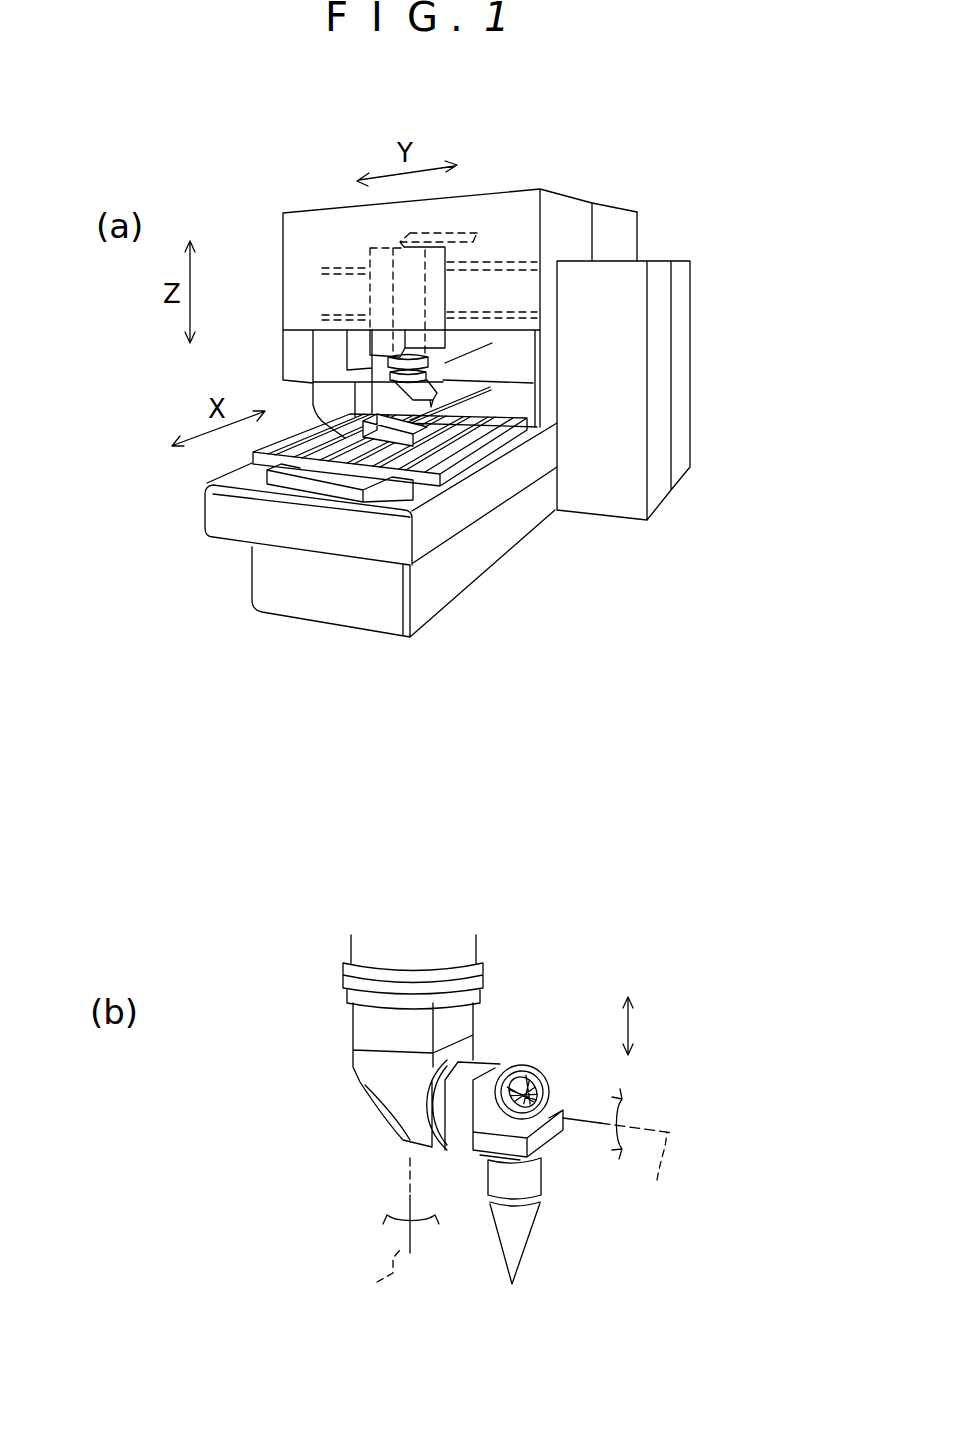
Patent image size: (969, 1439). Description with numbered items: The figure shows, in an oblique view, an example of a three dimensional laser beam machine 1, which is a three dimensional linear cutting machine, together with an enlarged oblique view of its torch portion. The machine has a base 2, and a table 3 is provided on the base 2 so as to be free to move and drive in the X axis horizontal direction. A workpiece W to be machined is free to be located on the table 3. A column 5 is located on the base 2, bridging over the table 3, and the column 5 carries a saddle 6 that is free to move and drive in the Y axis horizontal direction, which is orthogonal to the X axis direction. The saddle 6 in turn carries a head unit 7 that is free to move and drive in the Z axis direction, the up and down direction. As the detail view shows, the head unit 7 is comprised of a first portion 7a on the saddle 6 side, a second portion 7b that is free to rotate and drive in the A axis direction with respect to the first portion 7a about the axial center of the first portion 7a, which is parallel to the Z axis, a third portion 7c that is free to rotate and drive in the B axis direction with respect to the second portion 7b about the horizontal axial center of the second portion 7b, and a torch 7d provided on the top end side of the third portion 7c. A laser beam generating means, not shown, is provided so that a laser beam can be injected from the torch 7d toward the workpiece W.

The three dimensional laser beam machine 1 is at (478, 140).
The base 2 is at (473, 585).
The table 3 is at (467, 466).
The column 5 is at (283, 282).
The saddle 6 is at (473, 277).
The head unit 7 is at (447, 371).
The first portion 7a is at (480, 958).
The second portion 7b is at (350, 1040).
The third portion 7c is at (490, 1068).
The torch 7d is at (530, 1237).
The workpiece W is at (405, 437).